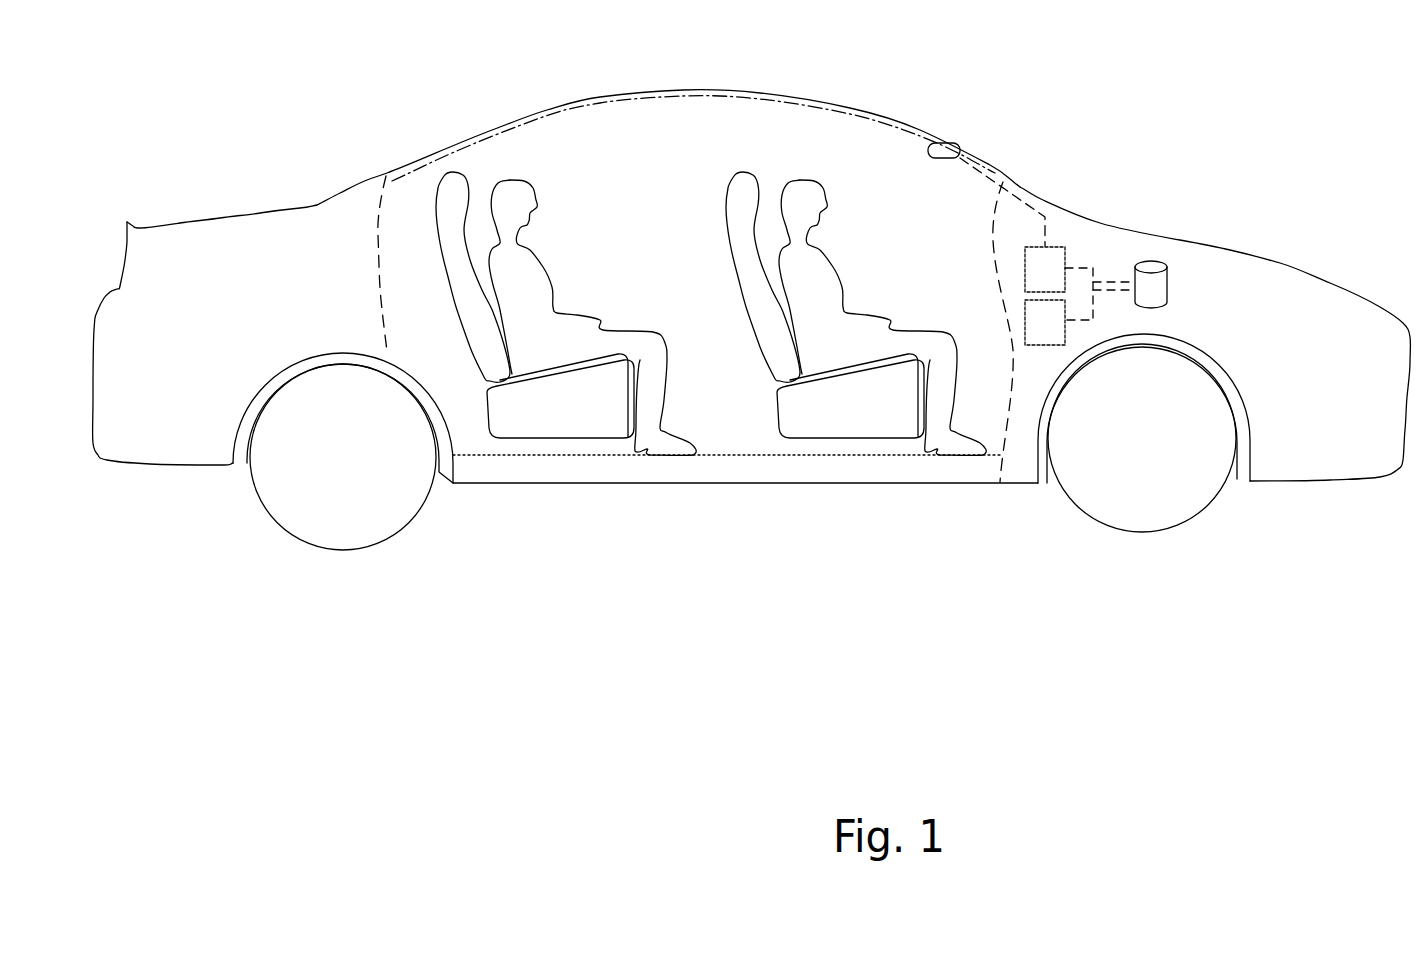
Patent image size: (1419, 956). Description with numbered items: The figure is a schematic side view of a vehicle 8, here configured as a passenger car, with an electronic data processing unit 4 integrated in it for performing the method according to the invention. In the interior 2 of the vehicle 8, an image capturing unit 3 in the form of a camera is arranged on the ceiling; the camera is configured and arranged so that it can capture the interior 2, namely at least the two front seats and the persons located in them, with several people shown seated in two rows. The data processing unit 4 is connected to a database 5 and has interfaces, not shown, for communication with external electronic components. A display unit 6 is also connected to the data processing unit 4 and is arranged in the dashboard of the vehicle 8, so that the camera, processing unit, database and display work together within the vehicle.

The interior 2 is at (752, 275).
The vehicle 8 is at (681, 85).
The image capturing unit 3 is at (942, 150).
The electronic data processing unit 4 is at (1034, 284).
The database 5 is at (1141, 303).
The display unit 6 is at (1034, 337).